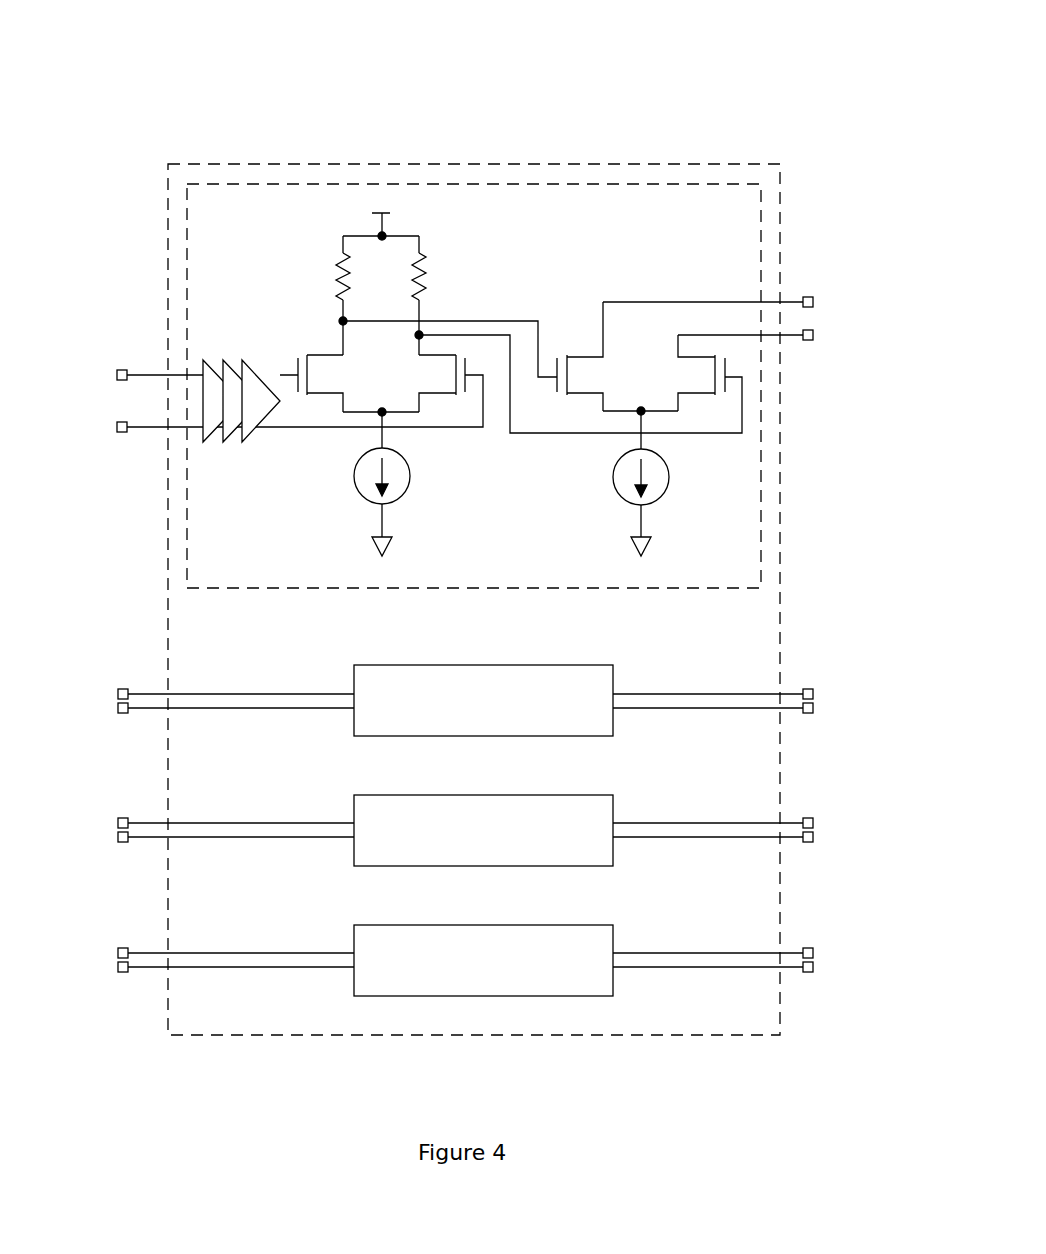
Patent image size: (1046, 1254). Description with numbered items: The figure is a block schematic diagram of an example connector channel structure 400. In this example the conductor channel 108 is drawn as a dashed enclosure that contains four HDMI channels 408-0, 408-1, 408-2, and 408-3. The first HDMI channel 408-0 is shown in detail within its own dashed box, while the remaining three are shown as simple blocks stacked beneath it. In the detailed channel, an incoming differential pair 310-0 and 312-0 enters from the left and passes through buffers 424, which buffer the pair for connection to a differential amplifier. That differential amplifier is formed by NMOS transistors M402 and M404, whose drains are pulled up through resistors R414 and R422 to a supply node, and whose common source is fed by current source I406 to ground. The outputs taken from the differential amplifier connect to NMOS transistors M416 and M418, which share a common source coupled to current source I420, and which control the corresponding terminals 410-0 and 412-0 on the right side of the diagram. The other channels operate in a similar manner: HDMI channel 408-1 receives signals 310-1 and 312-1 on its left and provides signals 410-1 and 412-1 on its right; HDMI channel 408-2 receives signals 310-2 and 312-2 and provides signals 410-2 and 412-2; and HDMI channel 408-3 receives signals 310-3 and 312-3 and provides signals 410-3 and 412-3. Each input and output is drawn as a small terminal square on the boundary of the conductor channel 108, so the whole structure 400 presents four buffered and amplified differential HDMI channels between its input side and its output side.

The connector channel structure 400 is at (167, 28).
The conductor channel 108 is at (259, 165).
The HDMI channel 408-0 is at (700, 247).
The HDMI channel 408-1 is at (515, 727).
The HDMI channel 408-2 is at (515, 857).
The HDMI channel 408-3 is at (515, 987).
The incoming differential pair signal 310-0 is at (174, 374).
The incoming signal 310-1 is at (116, 688).
The incoming signal 310-2 is at (116, 818).
The incoming signal 310-3 is at (116, 948).
The incoming differential pair signal 312-0 is at (266, 406).
The incoming signal 312-1 is at (116, 712).
The incoming signal 312-2 is at (116, 842).
The incoming signal 312-3 is at (116, 972).
The terminal 410-0 is at (813, 298).
The output signal 410-1 is at (813, 690).
The output signal 410-2 is at (813, 819).
The output signal 410-3 is at (813, 949).
The terminal 412-0 is at (813, 340).
The output signal 412-1 is at (813, 713).
The output signal 412-2 is at (813, 842).
The output signal 412-3 is at (813, 972).
The buffers 424 is at (278, 356).
The resistor R414 is at (313, 276).
The resistor R422 is at (448, 276).
The NMOS transistor M402 is at (337, 383).
The NMOS transistor M404 is at (427, 383).
The NMOS transistor M416 is at (595, 356).
The NMOS transistor M418 is at (686, 373).
The current source I406 is at (403, 502).
The current source I420 is at (662, 502).